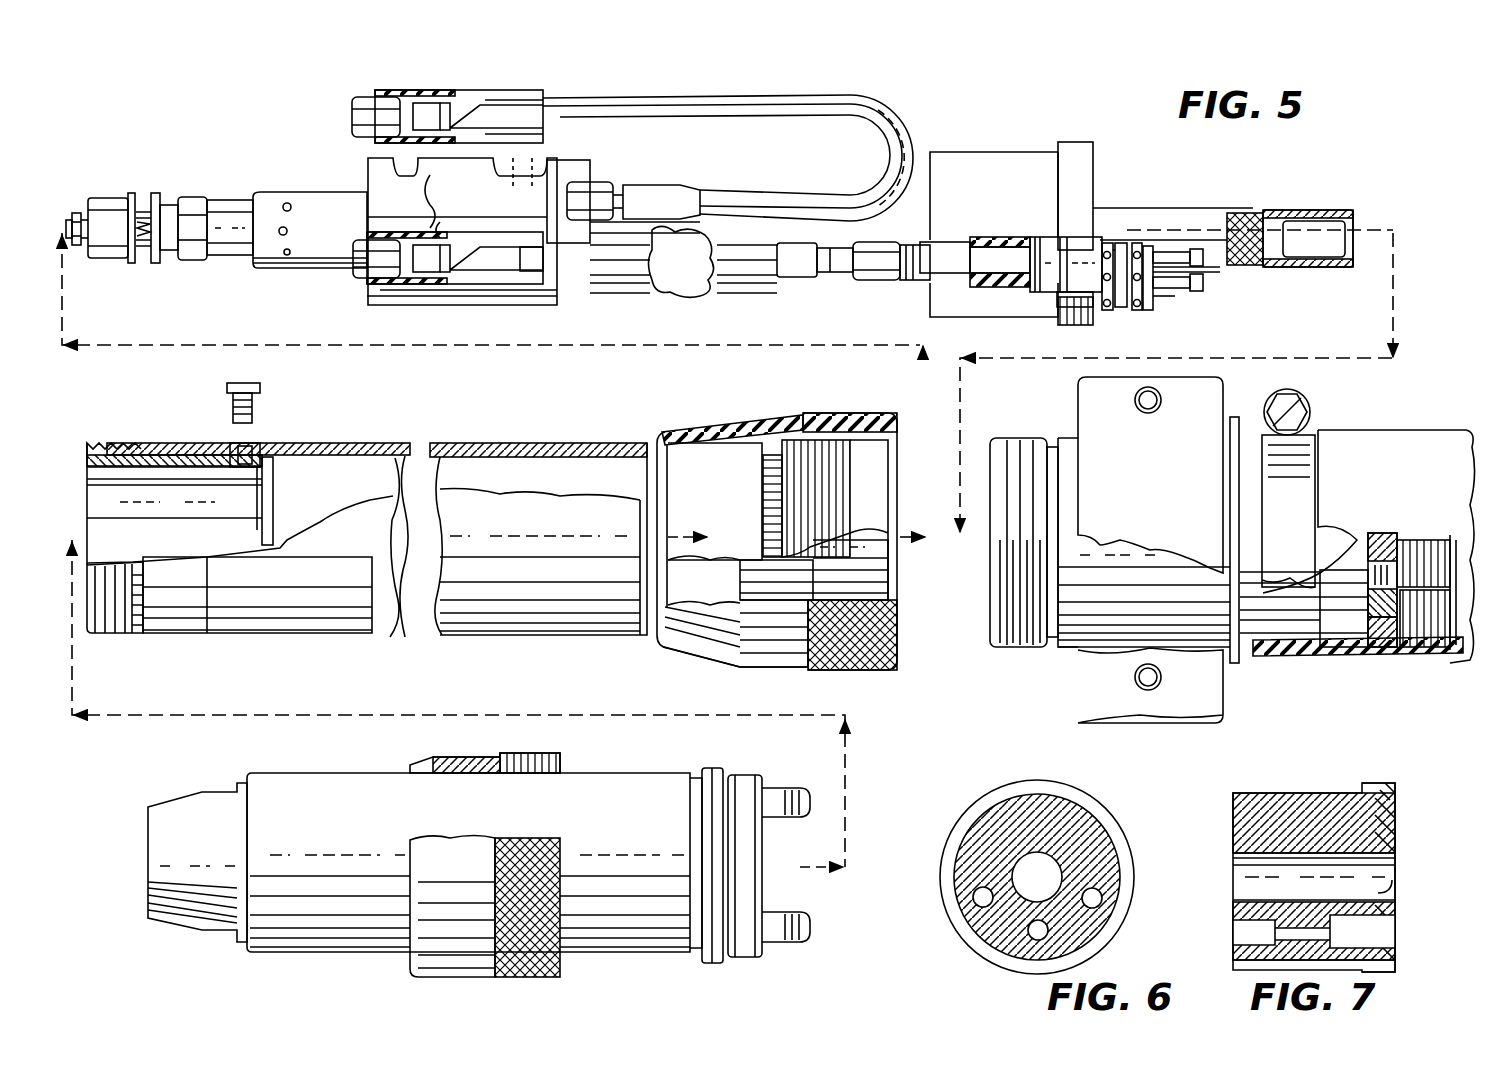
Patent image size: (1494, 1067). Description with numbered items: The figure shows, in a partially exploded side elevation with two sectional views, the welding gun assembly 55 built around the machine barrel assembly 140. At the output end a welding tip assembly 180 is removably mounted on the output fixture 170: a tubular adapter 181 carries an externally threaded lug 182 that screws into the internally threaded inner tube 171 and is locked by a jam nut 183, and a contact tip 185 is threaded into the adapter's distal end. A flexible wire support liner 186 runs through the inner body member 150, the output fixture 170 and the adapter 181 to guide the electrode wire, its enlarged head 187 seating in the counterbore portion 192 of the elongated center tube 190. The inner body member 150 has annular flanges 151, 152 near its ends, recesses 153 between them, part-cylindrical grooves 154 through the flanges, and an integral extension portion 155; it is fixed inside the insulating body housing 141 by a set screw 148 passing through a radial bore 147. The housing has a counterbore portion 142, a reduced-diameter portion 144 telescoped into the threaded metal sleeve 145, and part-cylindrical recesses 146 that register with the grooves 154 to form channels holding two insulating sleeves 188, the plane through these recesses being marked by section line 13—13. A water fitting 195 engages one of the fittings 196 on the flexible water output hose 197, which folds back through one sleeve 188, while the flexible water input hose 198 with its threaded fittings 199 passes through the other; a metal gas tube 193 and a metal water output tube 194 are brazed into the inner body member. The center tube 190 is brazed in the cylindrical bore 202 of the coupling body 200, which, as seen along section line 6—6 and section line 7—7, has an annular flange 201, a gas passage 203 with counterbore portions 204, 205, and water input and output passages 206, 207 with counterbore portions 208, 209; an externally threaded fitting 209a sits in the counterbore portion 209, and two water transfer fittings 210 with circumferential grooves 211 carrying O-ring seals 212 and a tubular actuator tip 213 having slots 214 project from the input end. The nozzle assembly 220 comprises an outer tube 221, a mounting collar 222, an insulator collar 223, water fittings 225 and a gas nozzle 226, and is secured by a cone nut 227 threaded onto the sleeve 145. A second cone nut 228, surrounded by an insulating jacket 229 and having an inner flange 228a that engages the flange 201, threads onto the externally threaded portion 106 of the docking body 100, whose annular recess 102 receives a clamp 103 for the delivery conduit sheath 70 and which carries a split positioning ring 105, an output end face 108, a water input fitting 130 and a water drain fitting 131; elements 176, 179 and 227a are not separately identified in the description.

In FIG. 5, the machine barrel assembly 140 is at (214, 125).
In FIG. 5, the welding tip assembly 180 is at (103, 186).
In FIG. 5, the tubular adapter 181 is at (110, 198).
In FIG. 5, the externally threaded lug 182 is at (156, 193).
In FIG. 5, the jam nut 183 is at (195, 262).
In FIG. 5, the contact tip 185 is at (77, 250).
In FIG. 5, the flexible wire support liner 186 is at (141, 250).
In FIG. 5, the output fixture 170 is at (258, 272).
In FIG. 5, the cylindrical inner tube 171 is at (240, 183).
In FIG. 5, the body bottom 176 is at (285, 270).
In FIG. 5, the housing 179 is at (290, 202).
In FIG. 5, the annular flange 151 is at (368, 170).
In FIG. 5, the annular flange 152 is at (545, 165).
In FIG. 5, the recesses 153 is at (417, 206).
In FIG. 5, the extension portion 155 is at (600, 185).
In FIG. 5, the insulating sleeves 188 is at (445, 90).
In FIG. 5, the water fitting 195 is at (545, 224).
In FIG. 5, the fittings 196 is at (352, 112).
In FIG. 5, the flexible water output hose 197 is at (715, 100).
In FIG. 5, the flexible water input hose 198 is at (745, 290).
In FIG. 5, the threaded fittings 199 is at (360, 283).
In FIG. 5, the metal water output tube 194 is at (806, 290).
In FIG. 5, the elongated metal gas tube 193 is at (690, 296).
In FIG. 5, the part-cylindrical grooves 154 is at (555, 296).
In FIG. 5, the inner body member 150 is at (458, 300).
In FIG. 5, the welding gun assembly 55 is at (990, 103).
In FIG. 5, the section line 6— 6 is at (1005, 112).
In FIG. 5, the cylindrical metal coupling body 200 is at (975, 152).
In FIG. 6, the cylindrical metal coupling body 200 is at (1115, 843).
In FIG. 7, the cylindrical metal coupling body 200 is at (1310, 793).
In FIG. 5, the annular flange 201 is at (1083, 142).
In FIG. 6, the annular flange 201 is at (1088, 798).
In FIG. 7, the annular flange 201 is at (1370, 785).
In FIG. 6, the cylindrical bore 202 is at (1055, 882).
In FIG. 7, the cylindrical bore 202 is at (1390, 900).
In FIG. 6, the gas passage 203 is at (975, 895).
In FIG. 5, the counterbore portion 204 is at (1097, 242).
In FIG. 5, the counterbore portion 205 is at (940, 247).
In FIG. 5, the water input passage 206 is at (990, 258).
In FIG. 6, the water input passage 206 is at (1100, 898).
In FIG. 6, the water output passage 207 is at (1034, 934).
In FIG. 7, the counterbore portions 208 is at (1395, 940).
In FIG. 7, the counterbore portions 209 is at (1240, 948).
In FIG. 5, the externally threaded fitting 209a is at (930, 296).
In FIG. 5, the water transfer fittings 210 is at (1212, 272).
In FIG. 5, the circumferential grooves 211 is at (1137, 300).
In FIG. 5, the O-ring seals 212 is at (1108, 312).
In FIG. 5, the tubular actuator tip 213 is at (1180, 300).
In FIG. 5, the slots 214 is at (1195, 292).
In FIG. 5, the elongated center tube 190 is at (1180, 208).
In FIG. 5, the enlarged head 187 is at (1350, 233).
In FIG. 5, the counterbore portion 192 is at (1296, 213).
In FIG. 5, the cylindrical body housing 141 is at (380, 443).
In FIG. 5, the counterbore portion 142 is at (530, 443).
In FIG. 5, the reduced-diameter portion 144 is at (165, 443).
In FIG. 5, the cylindrical metal sleeve 145 is at (140, 443).
In FIG. 5, the part-cylindrical recesses 146 is at (170, 518).
In FIG. 5, the radial bore 147 is at (250, 443).
In FIG. 5, the set screw 148 is at (260, 395).
In FIG. 5, the section line 13— 13 is at (250, 424).
In FIG. 5, the cone nut 228 is at (855, 413).
In FIG. 5, the inner flange 228a is at (753, 455).
In FIG. 5, the electrically insulating jacket 229 is at (703, 432).
In FIG. 5, the docking body 100 is at (1247, 662).
In FIG. 5, the annular channel or recess 102 is at (1300, 652).
In FIG. 5, the clamp 103 is at (1312, 510).
In FIG. 5, the resilient split positioning ring 105 is at (1236, 420).
In FIG. 5, the externally threaded portion 106 is at (1000, 648).
In FIG. 5, the output end face 108 is at (990, 600).
In FIG. 5, the water input fitting 130 is at (1422, 542).
In FIG. 5, the water drain fitting 131 is at (1385, 650).
In FIG. 5, the delivery conduit sheath 70 is at (1422, 430).
In FIG. 5, the nozzle assembly 220 is at (335, 772).
In FIG. 5, the cylindrical outer tube 221 is at (635, 753).
In FIG. 5, the annular mounting collar 222 is at (713, 768).
In FIG. 5, the electrical insulator collar 223 is at (745, 775).
In FIG. 5, the water fittings 225 is at (775, 908).
In FIG. 5, the gas nozzle 226 is at (205, 790).
In FIG. 5, the cone nut 227 is at (440, 977).
In FIG. 5, the key 227a is at (458, 748).
In FIG. 6, the section line 7— 7 is at (1040, 762).